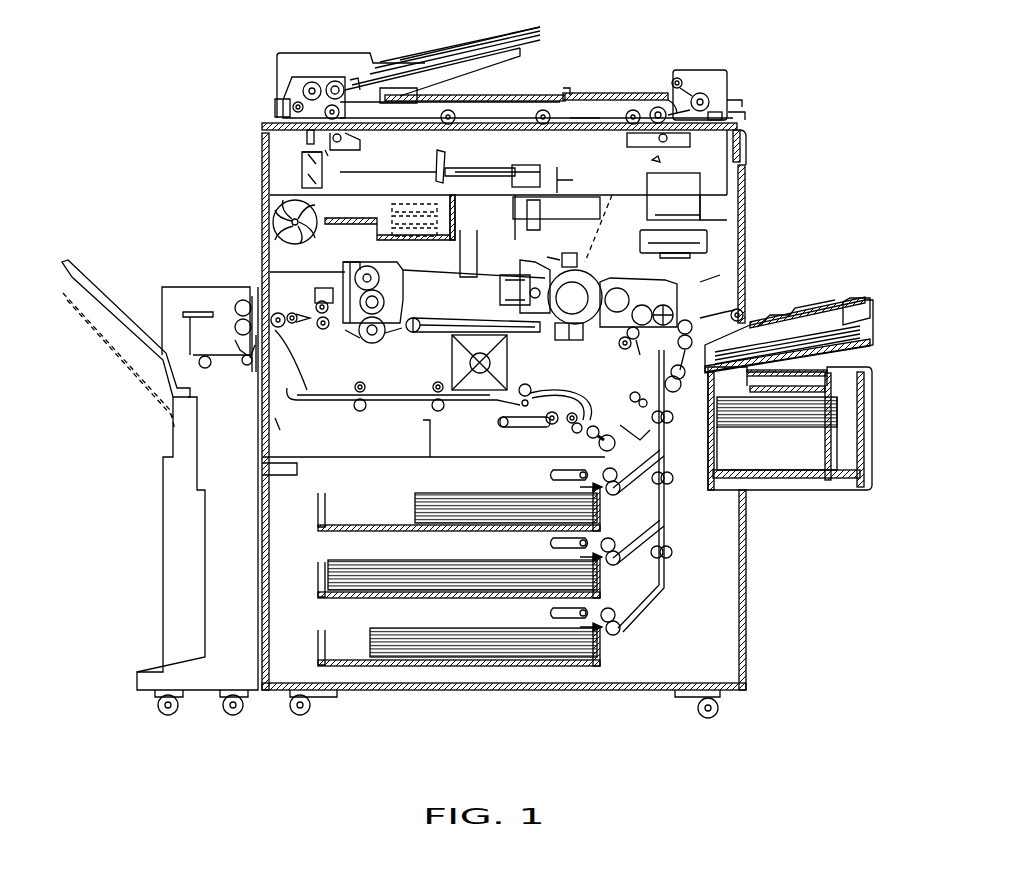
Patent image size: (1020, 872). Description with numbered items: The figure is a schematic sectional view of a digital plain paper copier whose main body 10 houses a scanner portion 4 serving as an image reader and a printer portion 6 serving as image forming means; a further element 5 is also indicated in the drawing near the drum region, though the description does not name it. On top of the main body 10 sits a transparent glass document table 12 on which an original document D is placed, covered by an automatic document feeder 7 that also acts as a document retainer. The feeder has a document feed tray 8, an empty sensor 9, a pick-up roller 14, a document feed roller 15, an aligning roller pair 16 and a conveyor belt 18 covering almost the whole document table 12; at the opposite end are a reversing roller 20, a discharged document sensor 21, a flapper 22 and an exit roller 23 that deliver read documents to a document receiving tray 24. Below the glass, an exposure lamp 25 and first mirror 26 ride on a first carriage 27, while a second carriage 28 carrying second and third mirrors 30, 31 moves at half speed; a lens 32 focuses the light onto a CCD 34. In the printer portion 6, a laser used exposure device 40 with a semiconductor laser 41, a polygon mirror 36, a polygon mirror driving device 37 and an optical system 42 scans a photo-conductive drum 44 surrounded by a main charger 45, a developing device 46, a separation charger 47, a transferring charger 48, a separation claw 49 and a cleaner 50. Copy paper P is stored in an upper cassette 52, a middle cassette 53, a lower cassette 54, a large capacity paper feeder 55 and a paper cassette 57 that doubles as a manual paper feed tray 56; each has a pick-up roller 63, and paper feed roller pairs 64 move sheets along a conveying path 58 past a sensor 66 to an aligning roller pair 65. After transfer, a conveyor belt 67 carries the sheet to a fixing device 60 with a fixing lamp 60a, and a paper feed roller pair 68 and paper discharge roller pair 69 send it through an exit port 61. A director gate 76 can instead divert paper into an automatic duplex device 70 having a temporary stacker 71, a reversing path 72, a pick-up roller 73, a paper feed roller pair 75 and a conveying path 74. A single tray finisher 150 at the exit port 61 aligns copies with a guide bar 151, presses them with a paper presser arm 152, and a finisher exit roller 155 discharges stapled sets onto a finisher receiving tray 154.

The scanner portion 4 is at (484, 150).
The process unit 5 is at (527, 268).
The printer portion 6 is at (690, 280).
The automatic document feeder 7 is at (406, 53).
The document feed tray 8 is at (435, 80).
The empty sensor 9 is at (357, 80).
The main body 10 is at (747, 575).
The document table 12 is at (613, 122).
The pick-up roller 14 is at (313, 82).
The document feed roller 15 is at (292, 88).
The aligning roller pair 16 is at (280, 106).
The conveyor belt 18 is at (510, 96).
The reversing roller 20 is at (744, 103).
The discharged document sensor 21 is at (747, 114).
The flapper 22 is at (703, 70).
The exit roller 23 is at (673, 80).
The document receiving tray 24 is at (536, 98).
The exposure lamp 25 is at (362, 148).
The first mirror 26 is at (330, 156).
The first carriage 27 is at (305, 137).
The second carriage 28 is at (305, 180).
The second mirror 30 is at (305, 158).
The third mirror 31 is at (322, 190).
The lens 32 is at (520, 168).
The CCD 34 is at (575, 181).
The polygon mirror 36 is at (688, 210).
The polygon mirror driving device 37 is at (715, 245).
The laser used exposure device 40 is at (748, 207).
The semiconductor laser 41 is at (652, 205).
The optical system 42 is at (520, 210).
The photo-conductive drum 44 is at (595, 285).
The main charger 45 is at (572, 262).
The developing device 46 is at (680, 292).
The separation charger 47 is at (560, 342).
The transferring charger 48 is at (532, 390).
The separation claw 49 is at (502, 300).
The cleaner 50 is at (480, 275).
The upper cassette 52 is at (320, 516).
The middle cassette 53 is at (320, 584).
The lower cassette 54 is at (320, 649).
The large capacity paper feeder 55 is at (810, 470).
The manual paper feed tray 56 is at (808, 310).
The paper cassette 57 is at (860, 298).
The conveying path 58 is at (418, 318).
The fixing device 60 is at (398, 275).
The fixing lamp 60a is at (348, 264).
The exit port 61 is at (258, 300).
The pick-up roller 63 is at (742, 310).
The paper feed roller pair 64 is at (688, 320).
The aligning roller pair 65 is at (618, 347).
The sensor 66 is at (632, 355).
The conveyor belt 67 is at (420, 334).
The paper feed roller pair 68 is at (323, 330).
The paper discharge roller pair 69 is at (282, 312).
The automatic duplex device 70 is at (310, 418).
The temporary stacker 71 is at (455, 440).
The reversing path 72 is at (343, 410).
The pick-up roller 73 is at (505, 428).
The conveying path 74 is at (590, 405).
The paper feed roller pair 75 is at (572, 434).
The director gate 76 is at (315, 310).
The single tray finisher 150 is at (160, 310).
The guide bar 151 is at (192, 310).
The paper presser arm 152 is at (210, 368).
The finisher receiving tray 154 is at (80, 268).
The finisher exit roller 155 is at (212, 372).
The original document D is at (520, 40).
The copy paper P is at (430, 505).